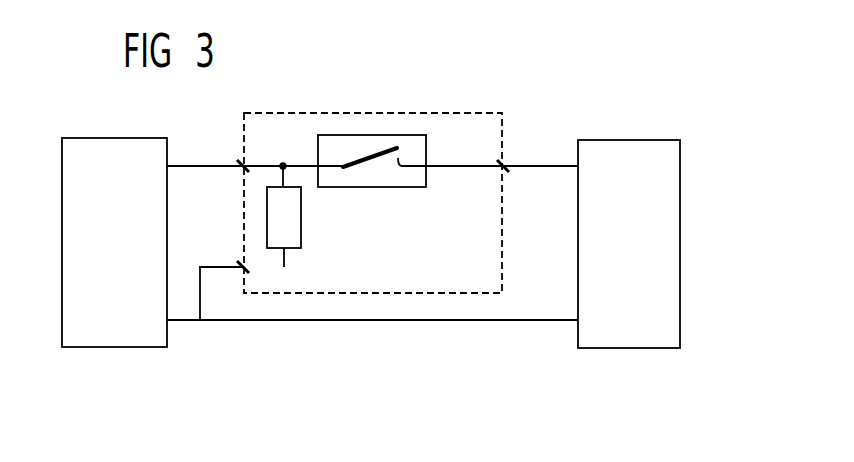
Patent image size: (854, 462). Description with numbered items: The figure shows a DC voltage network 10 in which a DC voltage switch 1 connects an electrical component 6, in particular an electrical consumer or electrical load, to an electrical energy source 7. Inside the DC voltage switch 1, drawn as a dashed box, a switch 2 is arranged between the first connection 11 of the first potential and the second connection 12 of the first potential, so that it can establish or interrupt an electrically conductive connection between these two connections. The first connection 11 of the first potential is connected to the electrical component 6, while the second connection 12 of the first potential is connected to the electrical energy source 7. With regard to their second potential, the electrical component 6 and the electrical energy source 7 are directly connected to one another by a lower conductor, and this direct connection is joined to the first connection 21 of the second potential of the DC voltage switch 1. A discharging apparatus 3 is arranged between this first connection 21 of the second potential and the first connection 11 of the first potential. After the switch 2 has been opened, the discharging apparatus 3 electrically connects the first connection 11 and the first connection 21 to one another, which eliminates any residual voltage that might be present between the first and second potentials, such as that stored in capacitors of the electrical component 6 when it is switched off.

The DC voltage switch 1 is at (455, 113).
The switch 2 is at (369, 113).
The discharging apparatus 3 is at (302, 220).
The electrical component 6 is at (62, 243).
The electrical energy source 7 is at (681, 246).
The DC voltage network 10 is at (651, 108).
The first connection of the first potential 11 is at (238, 162).
The second connection of the first potential 12 is at (507, 163).
The first connection of the second potential 21 is at (238, 264).